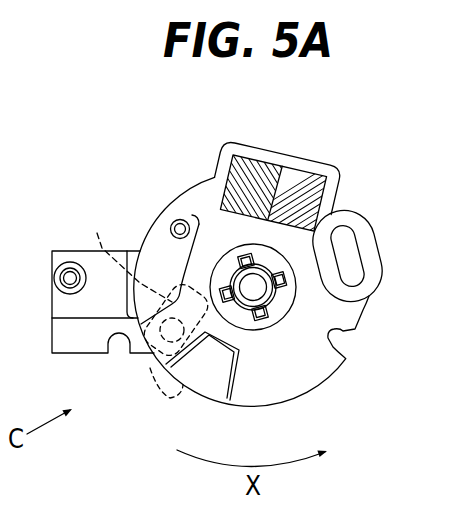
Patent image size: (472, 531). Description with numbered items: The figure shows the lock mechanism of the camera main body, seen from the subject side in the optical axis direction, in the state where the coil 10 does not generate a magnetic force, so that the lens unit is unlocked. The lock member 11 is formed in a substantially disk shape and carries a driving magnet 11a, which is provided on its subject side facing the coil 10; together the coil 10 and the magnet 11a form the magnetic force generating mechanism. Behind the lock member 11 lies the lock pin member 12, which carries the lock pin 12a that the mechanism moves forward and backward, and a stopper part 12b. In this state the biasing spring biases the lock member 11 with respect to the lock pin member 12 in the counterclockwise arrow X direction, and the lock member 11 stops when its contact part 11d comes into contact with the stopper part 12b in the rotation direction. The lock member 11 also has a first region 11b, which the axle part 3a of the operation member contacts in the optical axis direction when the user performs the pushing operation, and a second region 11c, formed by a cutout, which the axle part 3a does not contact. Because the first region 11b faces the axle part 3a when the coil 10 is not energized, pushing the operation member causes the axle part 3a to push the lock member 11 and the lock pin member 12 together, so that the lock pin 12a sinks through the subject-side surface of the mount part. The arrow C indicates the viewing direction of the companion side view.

The coil 10 is at (375, 272).
The lock member 11 is at (315, 362).
The driving magnet 11a is at (308, 176).
The first region 11b is at (150, 352).
The second region 11c is at (168, 402).
The contact part 11d is at (198, 218).
The lock pin member 12 is at (150, 237).
The lock pin 12a is at (56, 266).
The stopper part 12b is at (174, 221).
The axle part 3a is at (127, 253).